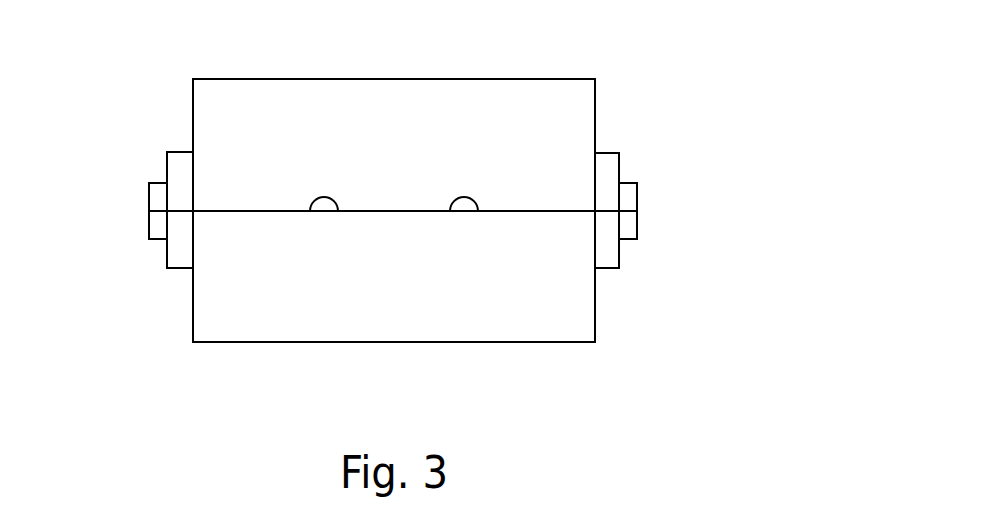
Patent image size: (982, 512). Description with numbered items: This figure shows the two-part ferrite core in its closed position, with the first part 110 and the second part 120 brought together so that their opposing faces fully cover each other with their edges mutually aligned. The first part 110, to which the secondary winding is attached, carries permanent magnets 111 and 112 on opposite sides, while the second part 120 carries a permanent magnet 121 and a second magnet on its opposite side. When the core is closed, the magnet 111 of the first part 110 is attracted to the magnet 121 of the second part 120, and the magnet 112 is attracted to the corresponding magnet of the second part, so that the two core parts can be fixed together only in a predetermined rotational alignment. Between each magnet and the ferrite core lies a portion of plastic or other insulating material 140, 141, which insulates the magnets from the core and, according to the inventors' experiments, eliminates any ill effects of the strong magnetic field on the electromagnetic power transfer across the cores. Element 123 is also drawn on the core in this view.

The first part of the ferrite core 110 is at (455, 342).
The permanent magnet 111 is at (637, 230).
The permanent magnet 112 is at (148, 226).
The second part of the ferrite core 120 is at (376, 105).
The permanent magnet 121 is at (632, 200).
The second connector 123 is at (148, 190).
The portion of insulating material 140 is at (181, 150).
The portion of insulating material 141 is at (607, 151).